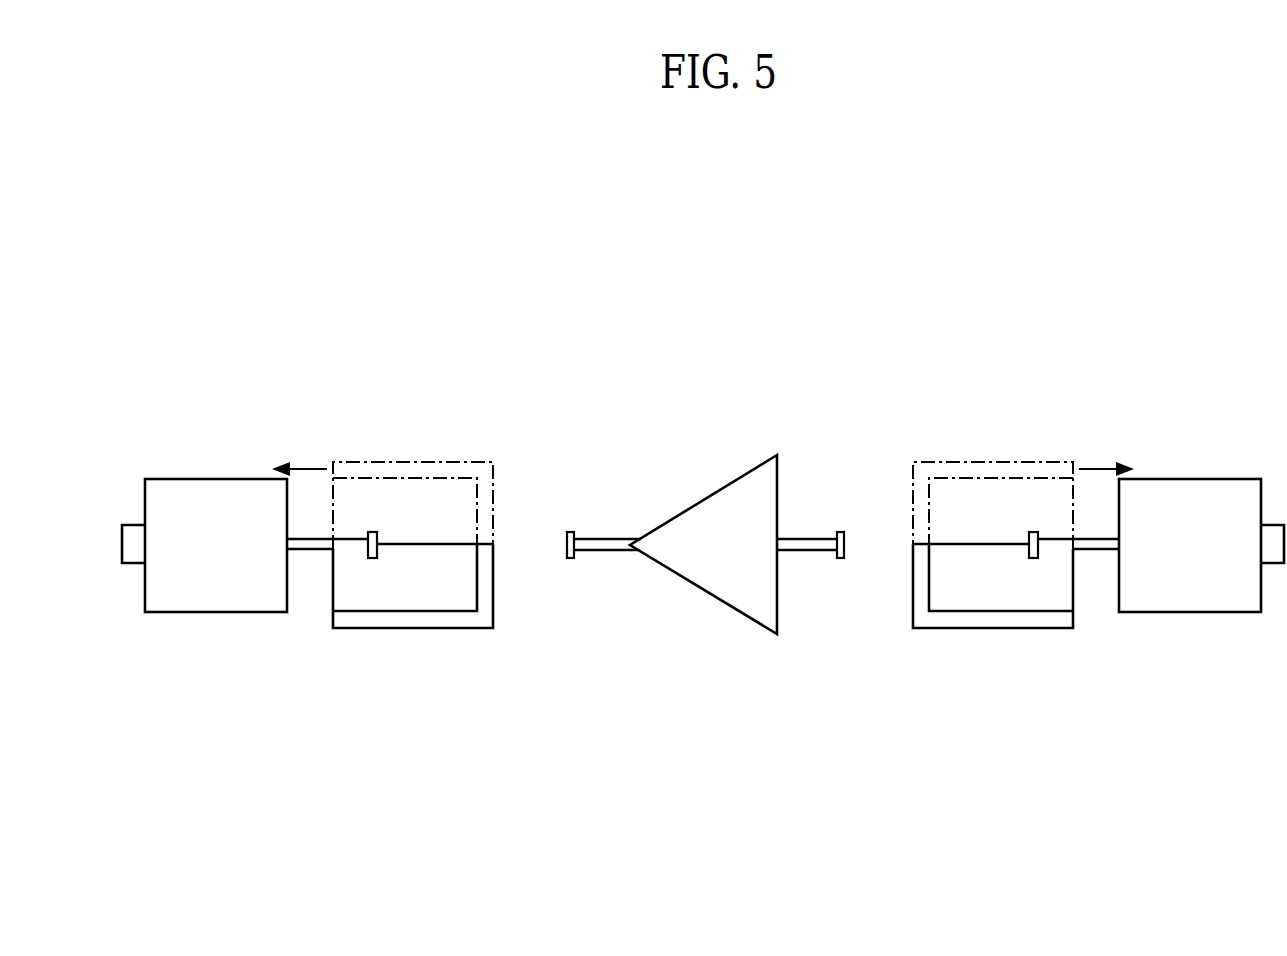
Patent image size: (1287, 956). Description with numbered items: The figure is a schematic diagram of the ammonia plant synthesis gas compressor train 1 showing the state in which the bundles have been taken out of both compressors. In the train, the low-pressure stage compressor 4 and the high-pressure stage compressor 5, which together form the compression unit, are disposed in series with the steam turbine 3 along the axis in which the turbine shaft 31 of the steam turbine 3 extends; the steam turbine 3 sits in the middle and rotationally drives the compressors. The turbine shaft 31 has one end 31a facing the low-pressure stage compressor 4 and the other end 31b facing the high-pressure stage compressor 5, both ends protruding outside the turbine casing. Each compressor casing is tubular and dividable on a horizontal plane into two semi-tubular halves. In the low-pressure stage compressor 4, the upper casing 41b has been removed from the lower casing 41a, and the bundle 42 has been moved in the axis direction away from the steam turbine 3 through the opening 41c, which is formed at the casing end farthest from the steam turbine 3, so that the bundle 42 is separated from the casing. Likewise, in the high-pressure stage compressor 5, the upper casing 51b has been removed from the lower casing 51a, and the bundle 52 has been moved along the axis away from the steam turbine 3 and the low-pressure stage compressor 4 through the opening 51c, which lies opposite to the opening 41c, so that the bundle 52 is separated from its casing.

The ammonia plant synthesis gas compressor train 1 is at (819, 306).
The steam turbine 3 is at (722, 468).
The turbine shaft 31 is at (612, 538).
The one end 31a is at (570, 558).
The other end 31b is at (840, 558).
The low-pressure stage compressor 4 is at (500, 400).
The lower casing 41a is at (346, 628).
The upper casing 41b is at (492, 460).
The opening 41c is at (353, 608).
The bundle 42 is at (189, 462).
The high-pressure stage compressor 5 is at (953, 412).
The lower casing 51a is at (1058, 628).
The upper casing 51b is at (920, 460).
The opening 51c is at (1053, 610).
The bundle 52 is at (1217, 462).